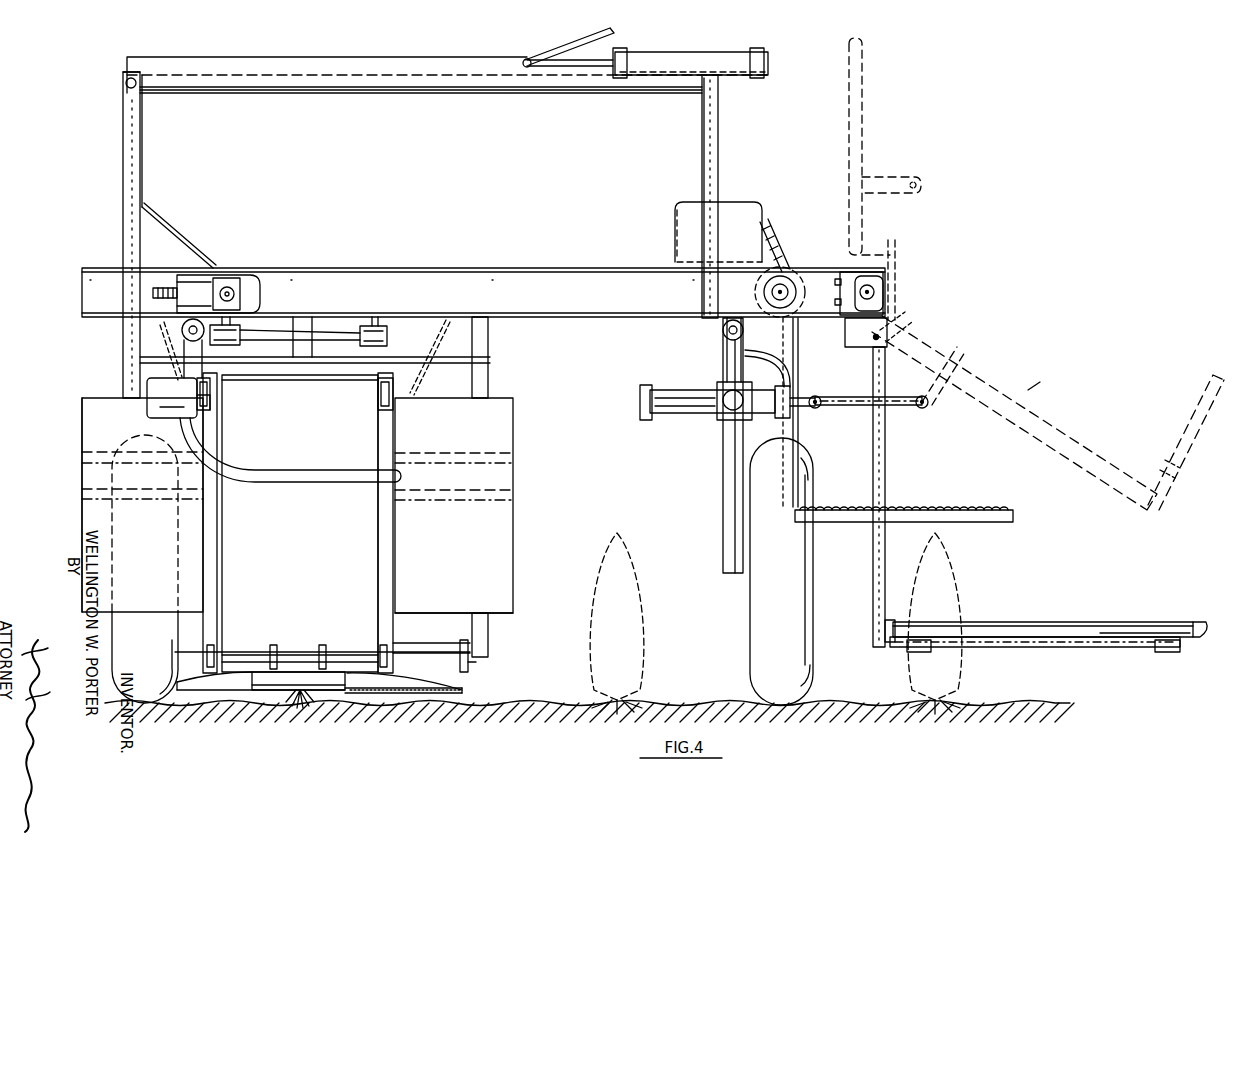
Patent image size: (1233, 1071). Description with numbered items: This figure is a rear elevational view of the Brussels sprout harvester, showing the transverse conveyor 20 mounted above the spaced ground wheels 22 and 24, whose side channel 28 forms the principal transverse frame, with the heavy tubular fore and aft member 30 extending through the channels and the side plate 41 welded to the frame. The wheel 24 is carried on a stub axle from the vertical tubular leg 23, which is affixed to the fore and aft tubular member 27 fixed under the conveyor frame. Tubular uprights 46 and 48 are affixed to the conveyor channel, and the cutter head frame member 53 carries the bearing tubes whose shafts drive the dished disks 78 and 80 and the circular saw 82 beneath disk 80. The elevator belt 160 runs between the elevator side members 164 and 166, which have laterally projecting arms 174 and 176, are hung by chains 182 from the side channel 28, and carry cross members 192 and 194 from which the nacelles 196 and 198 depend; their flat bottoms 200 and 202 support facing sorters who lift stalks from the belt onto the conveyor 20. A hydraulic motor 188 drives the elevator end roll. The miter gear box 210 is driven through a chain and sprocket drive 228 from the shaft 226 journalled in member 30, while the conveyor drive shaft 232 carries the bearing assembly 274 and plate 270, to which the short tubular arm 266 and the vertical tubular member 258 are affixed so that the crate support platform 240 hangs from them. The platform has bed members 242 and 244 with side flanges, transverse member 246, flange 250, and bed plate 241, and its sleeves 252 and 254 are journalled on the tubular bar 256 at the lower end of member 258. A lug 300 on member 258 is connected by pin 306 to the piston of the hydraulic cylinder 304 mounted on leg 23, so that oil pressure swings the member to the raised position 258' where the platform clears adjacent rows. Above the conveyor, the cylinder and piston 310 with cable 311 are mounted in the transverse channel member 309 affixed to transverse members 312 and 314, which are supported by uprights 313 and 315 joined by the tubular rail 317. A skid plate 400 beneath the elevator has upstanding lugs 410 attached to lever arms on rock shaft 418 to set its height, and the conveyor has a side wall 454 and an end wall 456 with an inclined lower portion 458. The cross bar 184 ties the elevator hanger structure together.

The transverse conveyor 20 is at (516, 266).
The ground wheel 22 is at (198, 700).
The vertical tubular leg 23 is at (723, 493).
The ground wheel 24 is at (760, 600).
The fore and aft extending tubular member 27 is at (722, 330).
The side channel 28 is at (573, 297).
The tubular fore and aft extending member 30 is at (783, 284).
The side plate 41 is at (760, 432).
The tubular upright 46 is at (157, 338).
The tubular upright 48 is at (489, 370).
The cutter head frame member 53 is at (460, 364).
The dished circular disk 78 is at (213, 690).
The dished circular disk 80 is at (385, 692).
The circular saw 82 is at (433, 694).
The elevator belt 160 is at (273, 565).
The elevator side member 164 is at (214, 537).
The elevator side member 166 is at (393, 540).
The laterally projecting arm 174 is at (178, 634).
The laterally projecting arm 176 is at (408, 648).
The chain 182 is at (157, 337).
The cross bar 184 is at (445, 352).
The hydraulic motor 188 is at (178, 398).
The cross member 192 is at (345, 466).
The cross member 194 is at (346, 495).
The nacelle 196 is at (82, 477).
The nacelle 198 is at (513, 478).
The flat bottom 200 is at (148, 612).
The flat bottom 202 is at (505, 612).
The miter gear box 210 is at (735, 206).
The shaft 226 is at (792, 282).
The chain and sprocket drive 228 is at (770, 232).
The conveyor drive shaft 232 is at (870, 292).
The crate support platform 240 is at (1089, 614).
The platform plate 241 is at (1148, 624).
The bed member 242 is at (886, 628).
The bed member 244 is at (1196, 628).
The transverse member 246 is at (1010, 640).
The flange 250 is at (972, 624).
The sleeve 252 is at (896, 650).
The sleeve 254 is at (1160, 651).
The tubular bar 256 is at (1090, 648).
The vertical tubular member 258 is at (854, 497).
The raised position of member 258 258' is at (1048, 413).
The short tubular arm 266 is at (912, 345).
The plate 270 is at (890, 300).
The bearing assembly 274 is at (890, 268).
The lug 300 is at (835, 408).
The hydraulic cylinder 304 is at (673, 390).
The pin 306 is at (817, 398).
The transverse channel member 309 is at (440, 60).
The cylinder and piston 310 is at (700, 52).
The cable 311 is at (600, 45).
The transverse member 312 is at (127, 88).
The upright 313 is at (124, 165).
The transverse member 314 is at (718, 96).
The upright 315 is at (708, 146).
The tubular rail 317 is at (517, 92).
The skid plate 400 is at (302, 700).
The upstanding lugs 410 is at (323, 645).
The rock shaft 418 is at (340, 645).
The side wall 454 is at (370, 186).
The end wall 456 is at (144, 140).
The inclined lower portion 458 is at (170, 223).